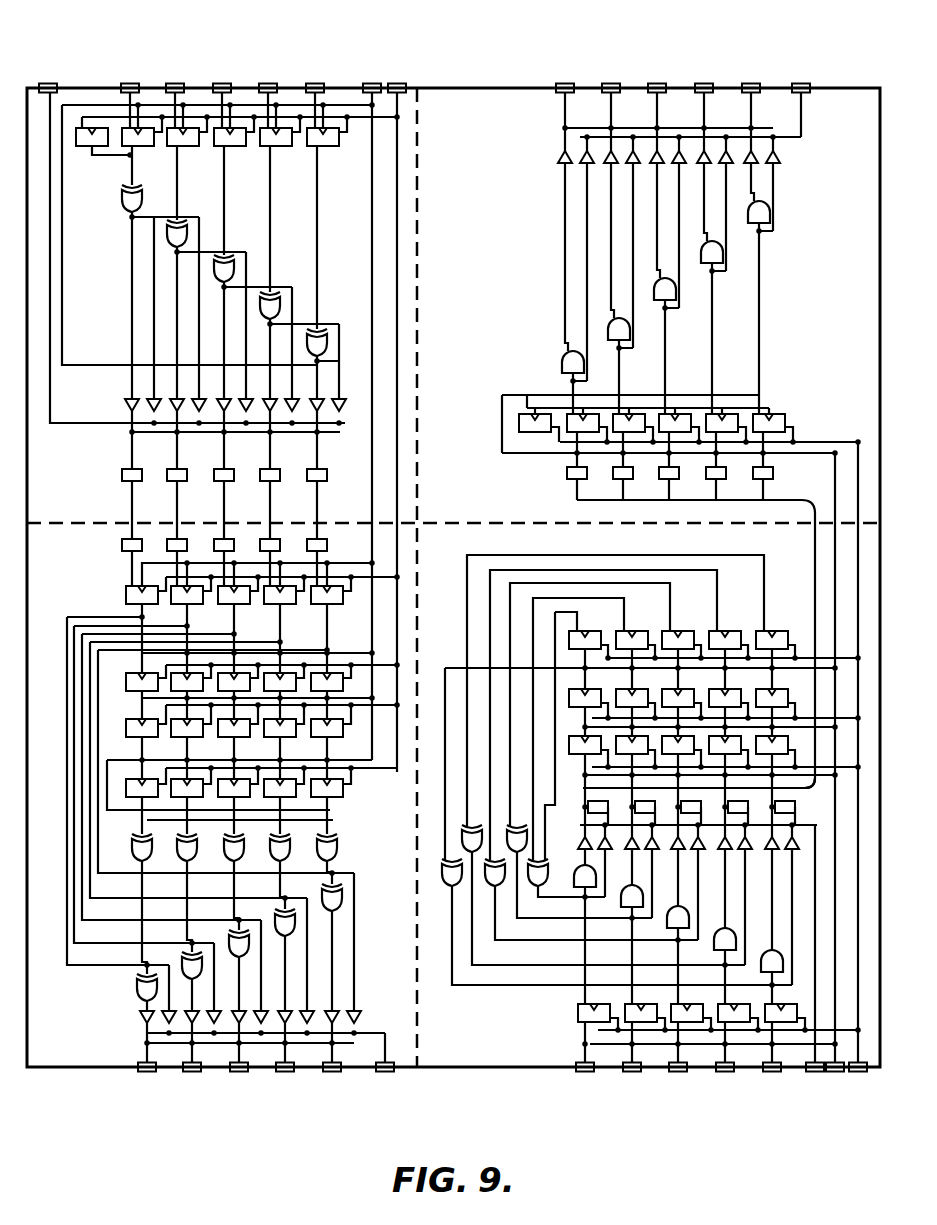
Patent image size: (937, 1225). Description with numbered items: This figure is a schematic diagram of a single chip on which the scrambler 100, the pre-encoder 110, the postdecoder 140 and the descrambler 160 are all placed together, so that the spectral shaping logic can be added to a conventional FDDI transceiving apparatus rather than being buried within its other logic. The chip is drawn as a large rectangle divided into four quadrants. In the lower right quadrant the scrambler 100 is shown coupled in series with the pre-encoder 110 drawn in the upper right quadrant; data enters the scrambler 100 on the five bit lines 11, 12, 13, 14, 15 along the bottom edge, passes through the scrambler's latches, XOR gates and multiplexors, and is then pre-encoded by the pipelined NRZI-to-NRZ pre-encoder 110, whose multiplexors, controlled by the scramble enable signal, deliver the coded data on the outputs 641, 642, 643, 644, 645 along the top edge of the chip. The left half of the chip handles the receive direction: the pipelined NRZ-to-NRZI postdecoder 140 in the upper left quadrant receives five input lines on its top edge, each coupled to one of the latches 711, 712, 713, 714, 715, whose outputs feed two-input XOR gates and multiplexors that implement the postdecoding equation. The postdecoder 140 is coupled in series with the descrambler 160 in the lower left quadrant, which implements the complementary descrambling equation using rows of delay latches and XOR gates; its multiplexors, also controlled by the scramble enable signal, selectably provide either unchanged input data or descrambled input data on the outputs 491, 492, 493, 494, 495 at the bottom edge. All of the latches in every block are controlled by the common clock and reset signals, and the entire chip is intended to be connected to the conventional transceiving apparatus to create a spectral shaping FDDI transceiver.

The postdecoder 140 is at (101, 45).
The pre-encoder 110 is at (522, 47).
The descrambler 160 is at (102, 1078).
The scrambler 100 is at (528, 1068).
The latch 715 is at (130, 83).
The latch 714 is at (175, 83).
The latch 713 is at (222, 83).
The latch 712 is at (268, 83).
The latch 711 is at (315, 83).
The output 645 is at (565, 83).
The output 644 is at (611, 83).
The output 643 is at (657, 83).
The output 642 is at (704, 83).
The output 641 is at (751, 83).
The output 495 is at (147, 1072).
The output 494 is at (192, 1072).
The output 493 is at (239, 1072).
The output 492 is at (285, 1072).
The output 491 is at (332, 1072).
The bit line 15 is at (585, 1072).
The bit line 14 is at (632, 1072).
The bit line 13 is at (678, 1072).
The bit line 12 is at (725, 1072).
The bit line 11 is at (772, 1072).